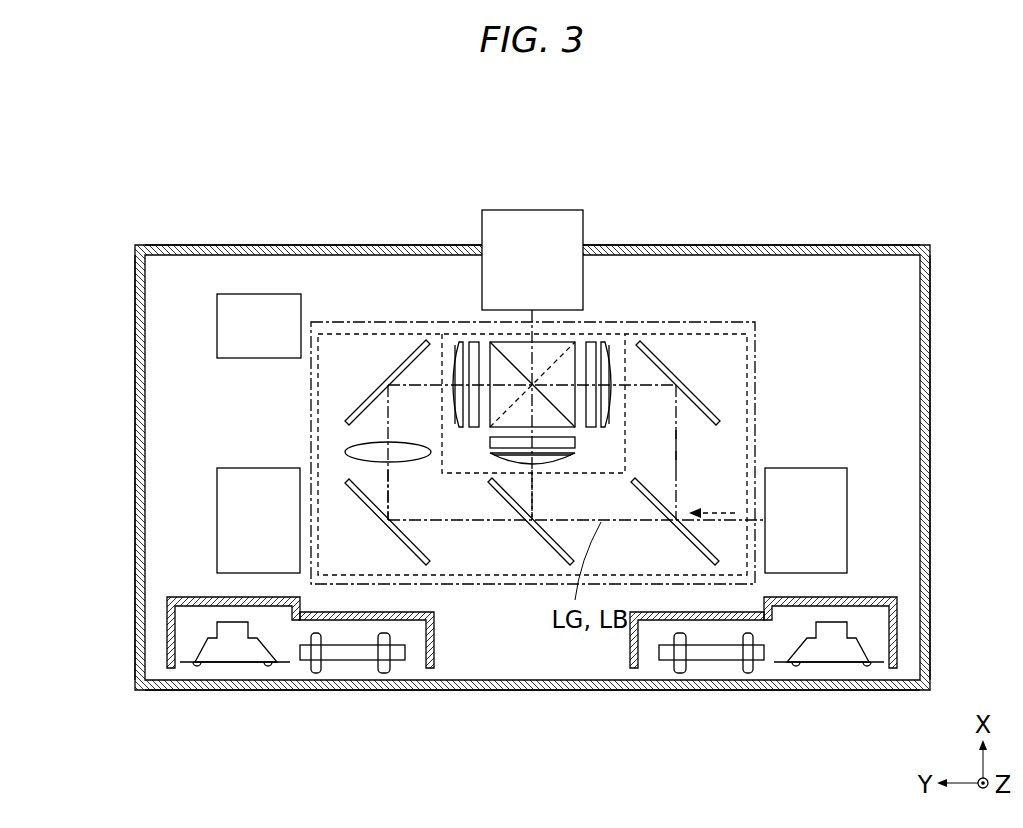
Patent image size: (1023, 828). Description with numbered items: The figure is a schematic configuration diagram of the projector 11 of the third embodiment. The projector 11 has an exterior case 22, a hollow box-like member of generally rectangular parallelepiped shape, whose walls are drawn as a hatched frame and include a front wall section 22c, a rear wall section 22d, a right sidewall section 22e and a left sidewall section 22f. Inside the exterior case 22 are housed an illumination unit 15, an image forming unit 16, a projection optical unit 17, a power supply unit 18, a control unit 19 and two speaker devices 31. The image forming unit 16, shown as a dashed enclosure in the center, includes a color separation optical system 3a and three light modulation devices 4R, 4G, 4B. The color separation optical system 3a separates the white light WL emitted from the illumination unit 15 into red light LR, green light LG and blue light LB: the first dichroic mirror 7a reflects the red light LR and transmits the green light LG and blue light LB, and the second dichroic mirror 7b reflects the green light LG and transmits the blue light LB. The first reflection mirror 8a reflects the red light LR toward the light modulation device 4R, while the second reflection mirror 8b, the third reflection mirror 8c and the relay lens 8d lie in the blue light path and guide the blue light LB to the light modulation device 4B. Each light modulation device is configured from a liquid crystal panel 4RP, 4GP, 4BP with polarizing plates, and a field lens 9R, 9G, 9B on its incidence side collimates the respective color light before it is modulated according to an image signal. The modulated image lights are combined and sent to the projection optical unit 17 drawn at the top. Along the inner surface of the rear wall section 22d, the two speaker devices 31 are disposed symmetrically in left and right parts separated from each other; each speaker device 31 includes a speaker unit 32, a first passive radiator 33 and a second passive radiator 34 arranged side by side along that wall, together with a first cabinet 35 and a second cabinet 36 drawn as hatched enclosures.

The projector 11 is at (227, 170).
The exterior case 22 is at (170, 232).
The front wall section 22c is at (277, 245).
The rear wall section 22d is at (537, 690).
The right sidewall section 22e is at (929, 365).
The left sidewall section 22f is at (136, 398).
The projection optical unit 17 is at (527, 215).
The control unit 19 is at (214, 322).
The power supply unit 18 is at (216, 498).
The illumination unit 15 is at (838, 490).
The image forming unit 16 is at (756, 340).
The color separation optical system 3a is at (754, 390).
The light modulation device 4B is at (474, 330).
The liquid crystal panel 4BP is at (448, 344).
The field lens 9B is at (455, 345).
The light modulation device 4R is at (591, 330).
The liquid crystal panel 4RP is at (608, 342).
The field lens 9R is at (616, 345).
The light modulation device 4G is at (480, 445).
The liquid crystal panel 4GP is at (577, 440).
The field lens 9G is at (577, 460).
The first reflection mirror 8a is at (672, 380).
The second reflection mirror 8b is at (370, 505).
The third reflection mirror 8c is at (378, 392).
The relay lens 8d is at (345, 450).
The first dichroic mirror 7a is at (677, 530).
The second dichroic mirror 7b is at (548, 540).
The blue light LB is at (390, 497).
The green light LG is at (533, 493).
The red light LR is at (676, 441).
The white light WL is at (720, 508).
The speaker device 31 is at (522, 688).
The speaker unit 32 is at (236, 662).
The first passive radiator 33 is at (338, 662).
The second passive radiator 34 is at (372, 673).
The first cabinet 35 is at (190, 597).
The second cabinet 36 is at (434, 640).